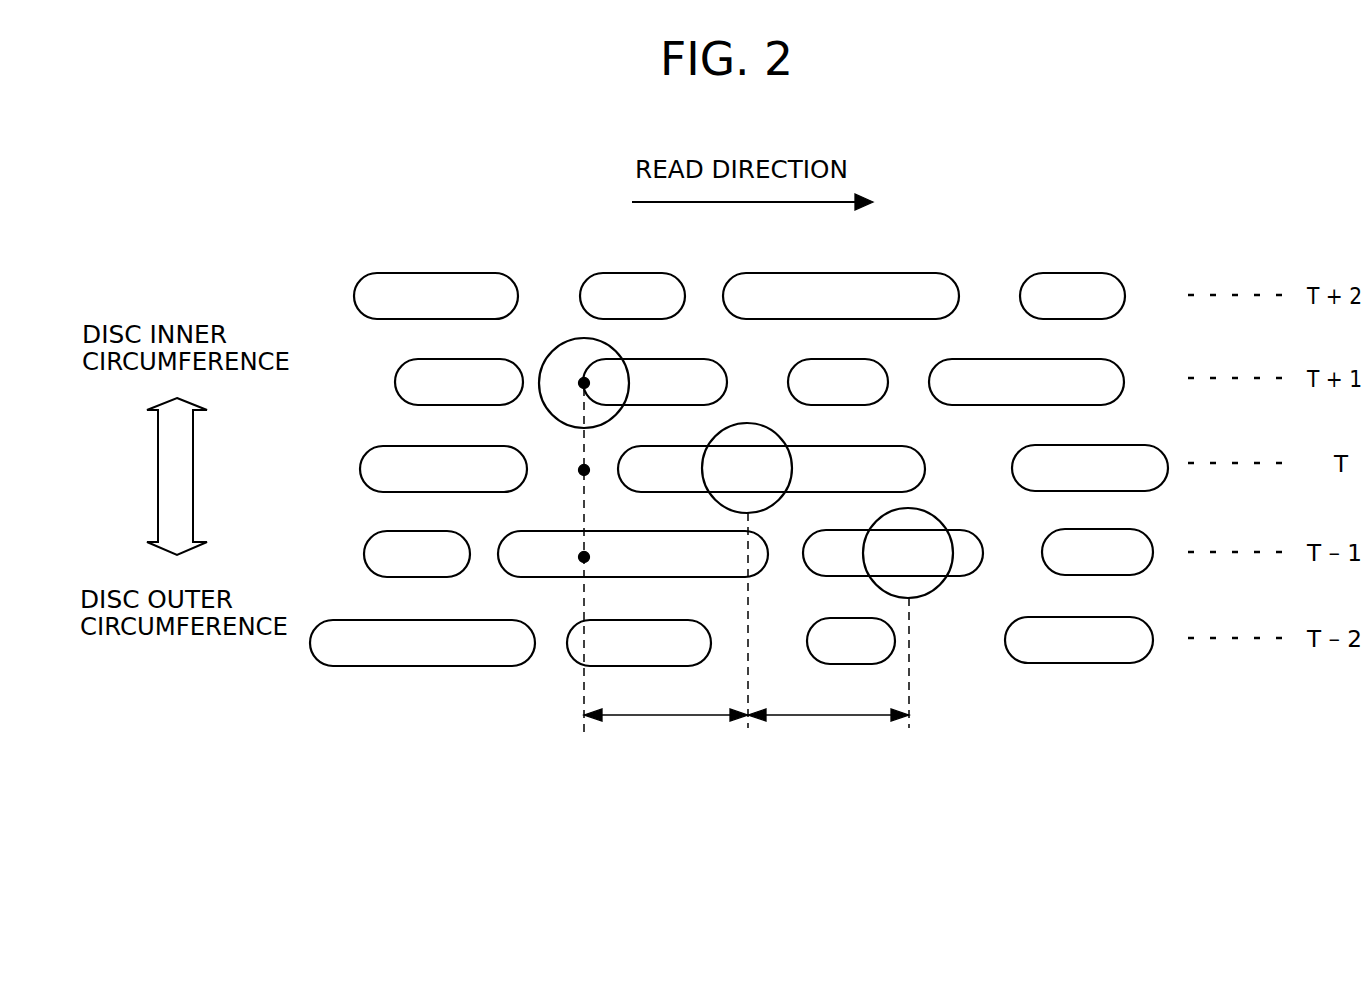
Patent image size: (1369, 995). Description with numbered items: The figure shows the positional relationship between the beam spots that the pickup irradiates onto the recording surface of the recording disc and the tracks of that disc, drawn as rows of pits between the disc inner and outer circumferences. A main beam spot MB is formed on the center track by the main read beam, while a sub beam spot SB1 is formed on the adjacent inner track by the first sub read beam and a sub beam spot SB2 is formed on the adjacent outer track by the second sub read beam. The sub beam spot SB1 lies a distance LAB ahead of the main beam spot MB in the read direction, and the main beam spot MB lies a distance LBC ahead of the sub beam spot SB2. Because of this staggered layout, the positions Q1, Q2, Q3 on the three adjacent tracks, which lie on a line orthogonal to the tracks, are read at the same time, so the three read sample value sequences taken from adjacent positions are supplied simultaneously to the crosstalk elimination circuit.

The sub beam spot SB1 is at (568, 358).
The main beam spot MB is at (752, 438).
The sub beam spot SB2 is at (923, 523).
The position Q1 is at (565, 386).
The position Q2 is at (562, 472).
The position Q3 is at (560, 559).
The distance LAB is at (666, 729).
The distance LBC is at (828, 729).